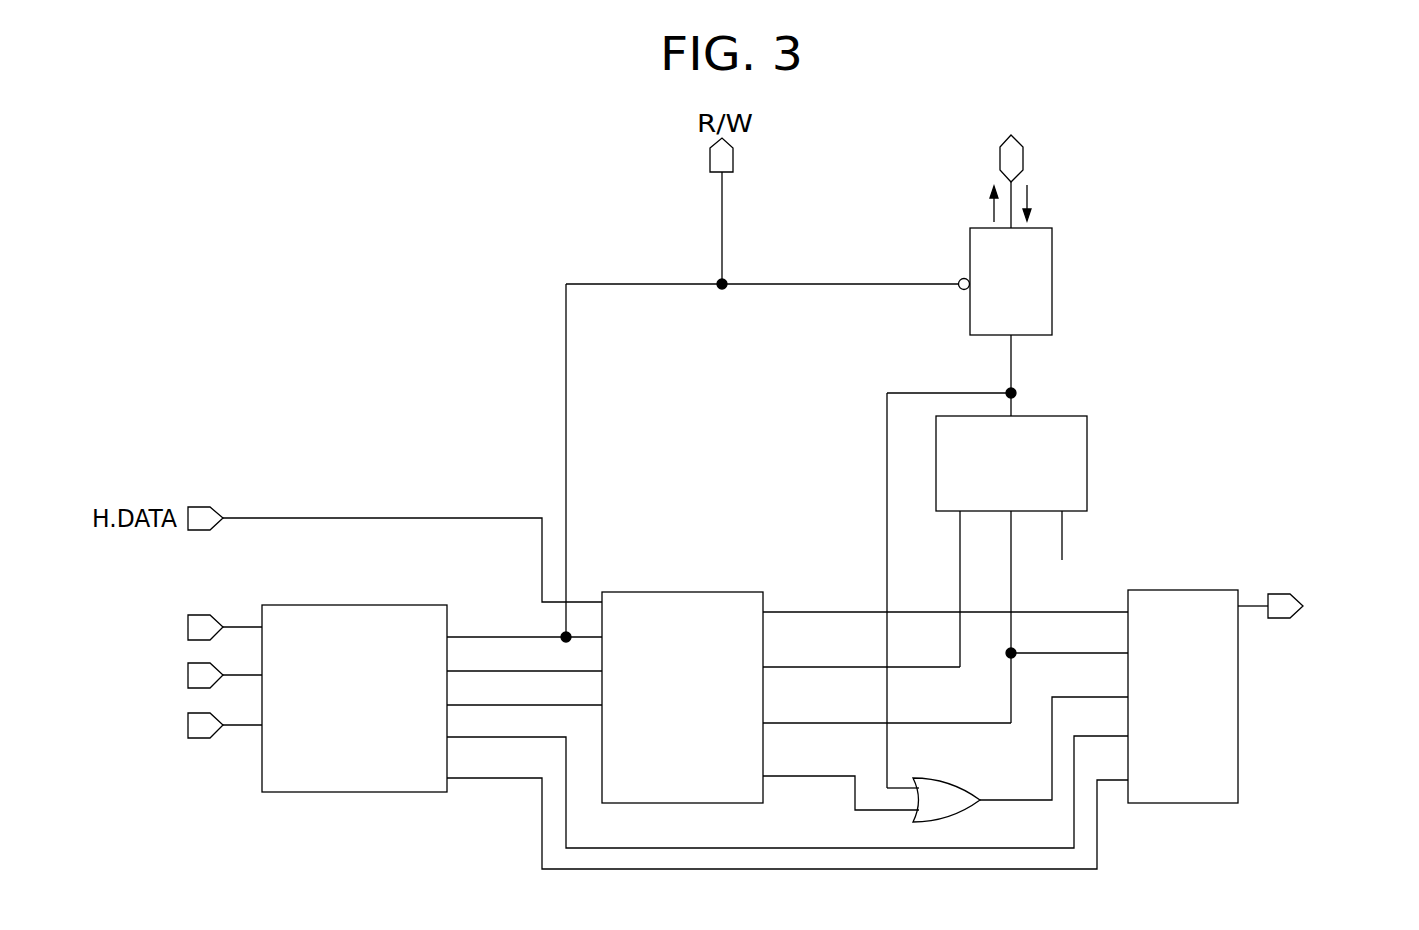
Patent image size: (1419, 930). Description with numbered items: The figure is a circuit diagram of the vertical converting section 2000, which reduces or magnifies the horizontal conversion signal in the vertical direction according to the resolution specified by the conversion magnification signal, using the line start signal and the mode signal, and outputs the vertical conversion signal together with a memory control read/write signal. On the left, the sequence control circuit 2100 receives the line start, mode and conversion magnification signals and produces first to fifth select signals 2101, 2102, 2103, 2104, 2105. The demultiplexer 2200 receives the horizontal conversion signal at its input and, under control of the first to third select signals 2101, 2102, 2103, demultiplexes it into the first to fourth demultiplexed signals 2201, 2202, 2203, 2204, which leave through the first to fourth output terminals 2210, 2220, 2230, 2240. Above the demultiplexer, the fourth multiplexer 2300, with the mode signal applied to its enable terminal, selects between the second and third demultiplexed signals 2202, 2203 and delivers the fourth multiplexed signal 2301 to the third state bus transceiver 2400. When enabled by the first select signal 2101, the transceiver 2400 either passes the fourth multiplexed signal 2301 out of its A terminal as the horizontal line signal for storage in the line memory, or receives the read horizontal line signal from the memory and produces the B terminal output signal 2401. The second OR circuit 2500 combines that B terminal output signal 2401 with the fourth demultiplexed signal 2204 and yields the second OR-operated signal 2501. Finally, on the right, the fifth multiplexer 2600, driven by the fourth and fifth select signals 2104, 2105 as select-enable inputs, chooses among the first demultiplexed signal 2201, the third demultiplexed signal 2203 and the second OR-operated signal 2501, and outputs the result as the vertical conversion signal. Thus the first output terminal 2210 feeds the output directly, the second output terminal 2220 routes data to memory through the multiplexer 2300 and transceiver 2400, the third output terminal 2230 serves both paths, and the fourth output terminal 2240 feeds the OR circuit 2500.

The vertical converting section 2000 is at (376, 213).
The sequence control circuit 2100 is at (362, 605).
The first select signal 2101 is at (524, 624).
The second select signal 2102 is at (524, 655).
The third select signal 2103 is at (524, 689).
The fourth select signal 2104 is at (787, 792).
The fifth select signal 2105 is at (787, 823).
The demultiplexer 2200 is at (682, 668).
The first demultiplexed signal 2201 is at (945, 596).
The second demultiplexed signal 2202 is at (861, 651).
The third demultiplexed signal 2203 is at (887, 706).
The fourth demultiplexed signal 2204 is at (841, 793).
The first output terminal 2210 is at (719, 608).
The second output terminal 2220 is at (719, 665).
The third output terminal 2230 is at (719, 720).
The fourth output terminal 2240 is at (719, 777).
The fourth multiplexer 2300 is at (1087, 462).
The fourth multiplexed signal 2301 is at (1036, 372).
The third state bus transceiver 2400 is at (1052, 283).
The B terminal output signal 2401 is at (993, 345).
The second OR circuit 2500 is at (968, 760).
The second OR-operated signal 2501 is at (1054, 763).
The fifth multiplexer 2600 is at (1183, 590).